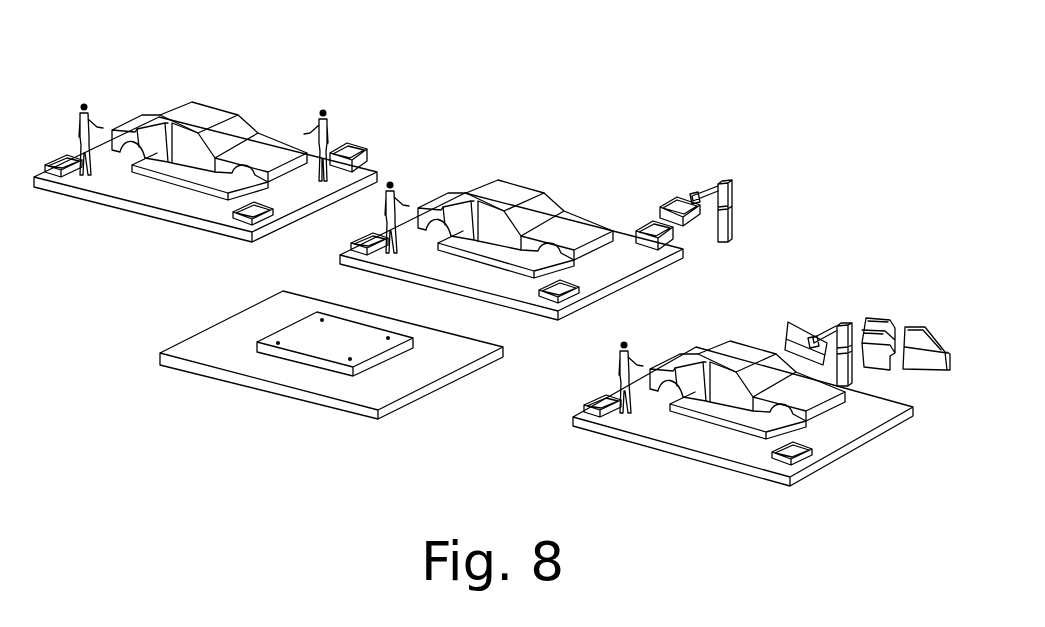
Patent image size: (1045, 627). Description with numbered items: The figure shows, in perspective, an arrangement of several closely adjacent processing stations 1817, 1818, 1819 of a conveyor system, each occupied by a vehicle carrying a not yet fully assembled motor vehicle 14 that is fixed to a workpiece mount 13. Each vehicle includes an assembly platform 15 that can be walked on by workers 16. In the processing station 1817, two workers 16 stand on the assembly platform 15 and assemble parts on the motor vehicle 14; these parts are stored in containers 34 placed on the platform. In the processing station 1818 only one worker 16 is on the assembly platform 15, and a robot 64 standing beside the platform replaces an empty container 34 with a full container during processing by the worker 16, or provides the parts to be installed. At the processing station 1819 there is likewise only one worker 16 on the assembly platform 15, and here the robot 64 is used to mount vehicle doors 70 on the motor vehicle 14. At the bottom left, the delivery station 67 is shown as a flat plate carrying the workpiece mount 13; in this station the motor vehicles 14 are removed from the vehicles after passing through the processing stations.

The workpiece mount 13 is at (297, 359).
The motor vehicle 14 is at (200, 108).
The assembly platform 15 is at (100, 197).
The worker 16 is at (89, 104).
The container 34 is at (352, 143).
The robot 64 is at (727, 198).
The delivery station 67 is at (168, 322).
The vehicle door 70 is at (803, 328).
The processing station 1817 is at (283, 104).
The processing station 1818 is at (556, 176).
The processing station 1819 is at (835, 298).